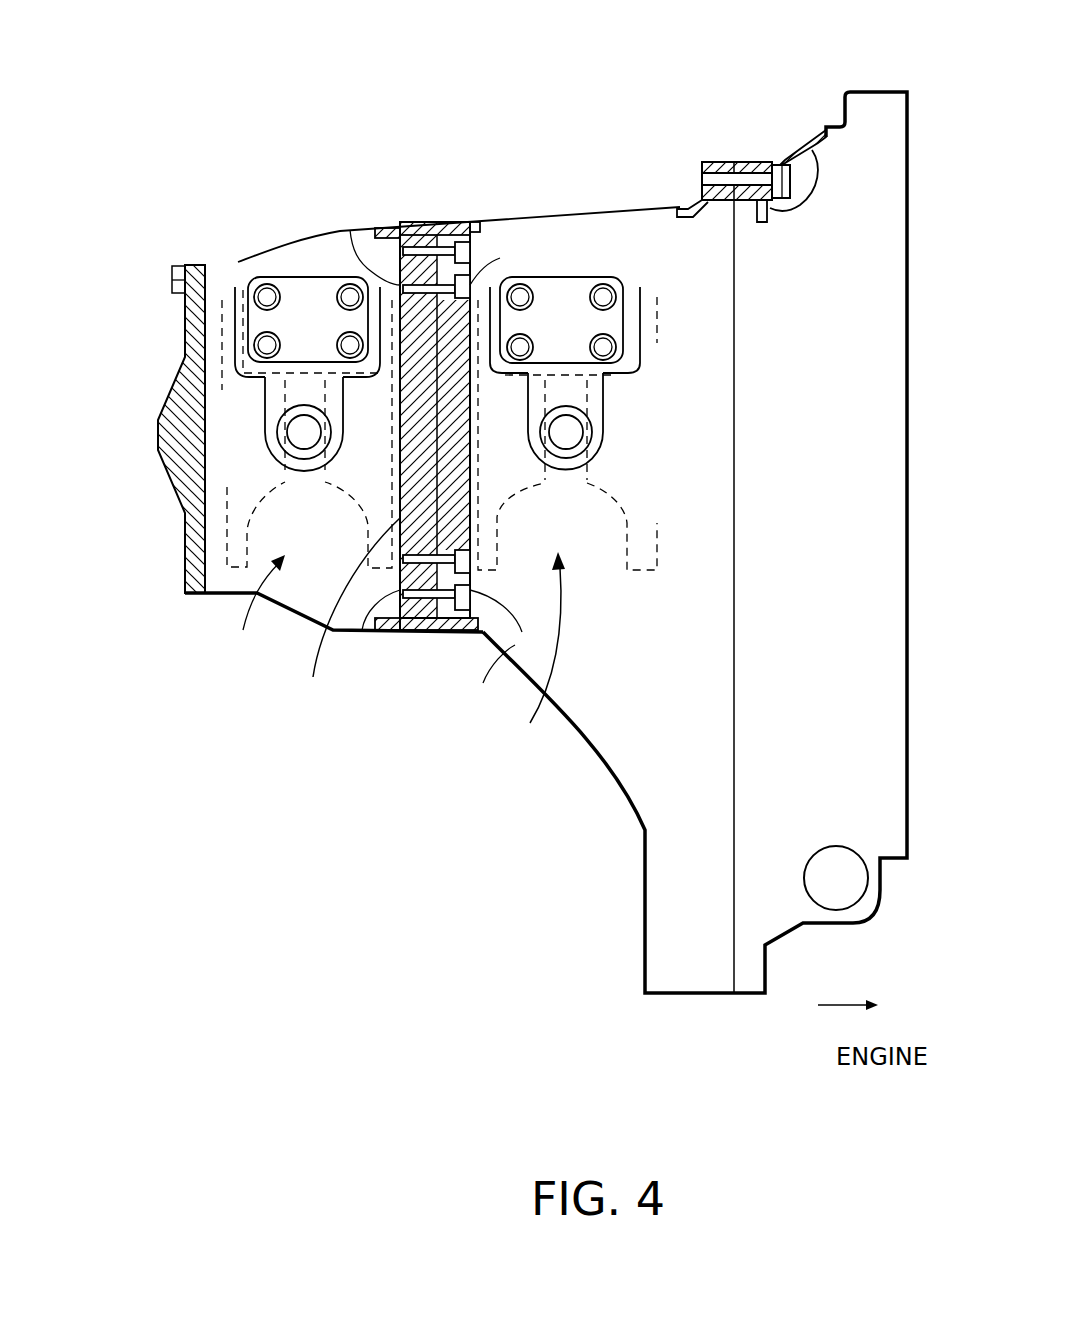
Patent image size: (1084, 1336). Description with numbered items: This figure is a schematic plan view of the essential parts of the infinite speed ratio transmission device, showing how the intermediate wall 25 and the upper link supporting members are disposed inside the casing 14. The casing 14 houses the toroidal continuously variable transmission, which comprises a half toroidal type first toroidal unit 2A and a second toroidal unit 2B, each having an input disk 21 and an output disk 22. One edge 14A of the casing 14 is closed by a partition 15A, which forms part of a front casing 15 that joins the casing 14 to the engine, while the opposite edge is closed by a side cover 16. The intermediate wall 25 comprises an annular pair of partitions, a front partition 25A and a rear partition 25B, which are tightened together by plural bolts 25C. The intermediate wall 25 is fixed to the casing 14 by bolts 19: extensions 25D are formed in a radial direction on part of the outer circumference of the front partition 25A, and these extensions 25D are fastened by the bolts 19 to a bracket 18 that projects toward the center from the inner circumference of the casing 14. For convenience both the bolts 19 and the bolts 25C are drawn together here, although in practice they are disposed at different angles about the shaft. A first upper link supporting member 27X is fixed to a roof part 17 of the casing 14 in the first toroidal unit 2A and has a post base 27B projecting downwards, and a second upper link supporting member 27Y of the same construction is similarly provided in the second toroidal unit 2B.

The front casing 15 is at (866, 104).
The partition 15A is at (792, 150).
The casing 14 is at (680, 207).
The edge of the casing 14A is at (740, 162).
The side cover 16 is at (180, 385).
The roof part 17 is at (222, 300).
The bracket 18 is at (386, 240).
The bolts 19 is at (470, 240).
The input disk 21 is at (353, 497).
The output disk 22 is at (220, 597).
The intermediate wall 25 is at (473, 245).
The front partition 25A is at (534, 659).
The rear partition 25B is at (343, 618).
The bolts 25C is at (350, 232).
The extensions 25D is at (447, 222).
The first upper link supporting member 27X is at (548, 277).
The second upper link supporting member 27Y is at (327, 277).
The post base 27B is at (283, 447).
The first toroidal unit 2A is at (491, 681).
The second toroidal unit 2B is at (258, 612).